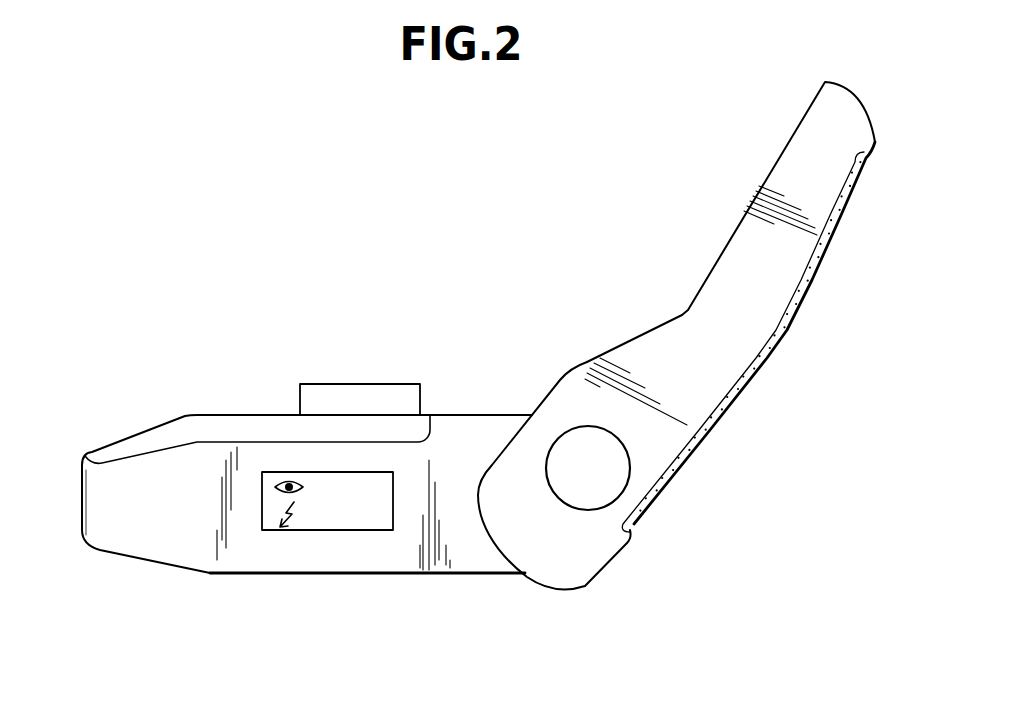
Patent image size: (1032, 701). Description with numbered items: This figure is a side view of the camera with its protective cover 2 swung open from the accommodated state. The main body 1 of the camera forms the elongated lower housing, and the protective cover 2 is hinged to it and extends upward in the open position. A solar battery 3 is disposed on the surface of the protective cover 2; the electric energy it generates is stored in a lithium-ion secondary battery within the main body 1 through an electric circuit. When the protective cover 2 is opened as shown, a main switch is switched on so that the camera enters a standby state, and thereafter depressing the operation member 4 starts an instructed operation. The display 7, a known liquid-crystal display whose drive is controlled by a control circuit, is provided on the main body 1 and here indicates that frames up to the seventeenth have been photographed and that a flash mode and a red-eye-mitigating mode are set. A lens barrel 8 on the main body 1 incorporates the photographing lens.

The main body 1 is at (182, 562).
The protective cover 2 is at (855, 125).
The solar battery 3 is at (807, 298).
The operation member 4 is at (615, 483).
The display 7 is at (330, 527).
The lens barrel 8 is at (360, 383).